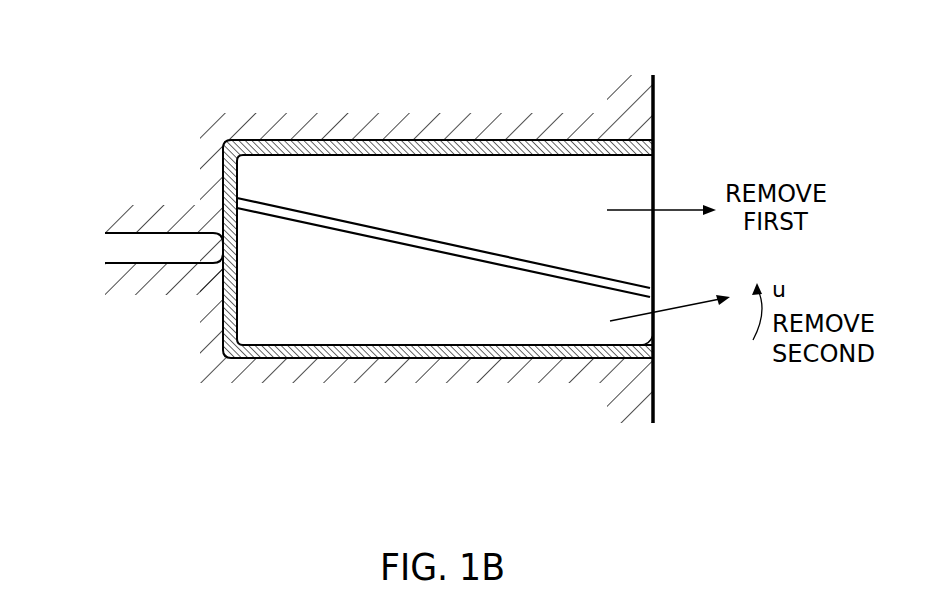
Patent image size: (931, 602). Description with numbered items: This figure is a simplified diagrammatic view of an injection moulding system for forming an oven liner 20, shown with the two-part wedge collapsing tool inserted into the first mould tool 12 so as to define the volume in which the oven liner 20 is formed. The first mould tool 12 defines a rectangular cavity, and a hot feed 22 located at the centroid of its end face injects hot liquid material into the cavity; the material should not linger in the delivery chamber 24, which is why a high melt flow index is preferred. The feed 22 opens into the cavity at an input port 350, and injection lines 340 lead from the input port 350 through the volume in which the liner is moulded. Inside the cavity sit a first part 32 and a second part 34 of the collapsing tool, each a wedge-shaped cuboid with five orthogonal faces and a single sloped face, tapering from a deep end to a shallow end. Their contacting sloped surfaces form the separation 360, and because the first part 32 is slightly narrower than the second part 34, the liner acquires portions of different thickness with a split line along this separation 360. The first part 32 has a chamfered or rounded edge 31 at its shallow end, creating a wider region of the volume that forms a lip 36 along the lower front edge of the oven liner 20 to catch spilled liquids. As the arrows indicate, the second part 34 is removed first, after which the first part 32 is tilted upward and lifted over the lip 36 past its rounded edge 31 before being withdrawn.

The first mould tool 12 is at (478, 88).
The oven liner 20 is at (382, 259).
The hot feed 22 is at (108, 249).
The delivery chamber 24 is at (166, 263).
The chamfered or rounded edge 31 is at (492, 234).
The first part 32 is at (360, 301).
The second part 34 is at (474, 212).
The lip 36 is at (654, 345).
The injection lines 340 is at (335, 140).
The input port 350 is at (220, 235).
The separation 360 is at (480, 250).